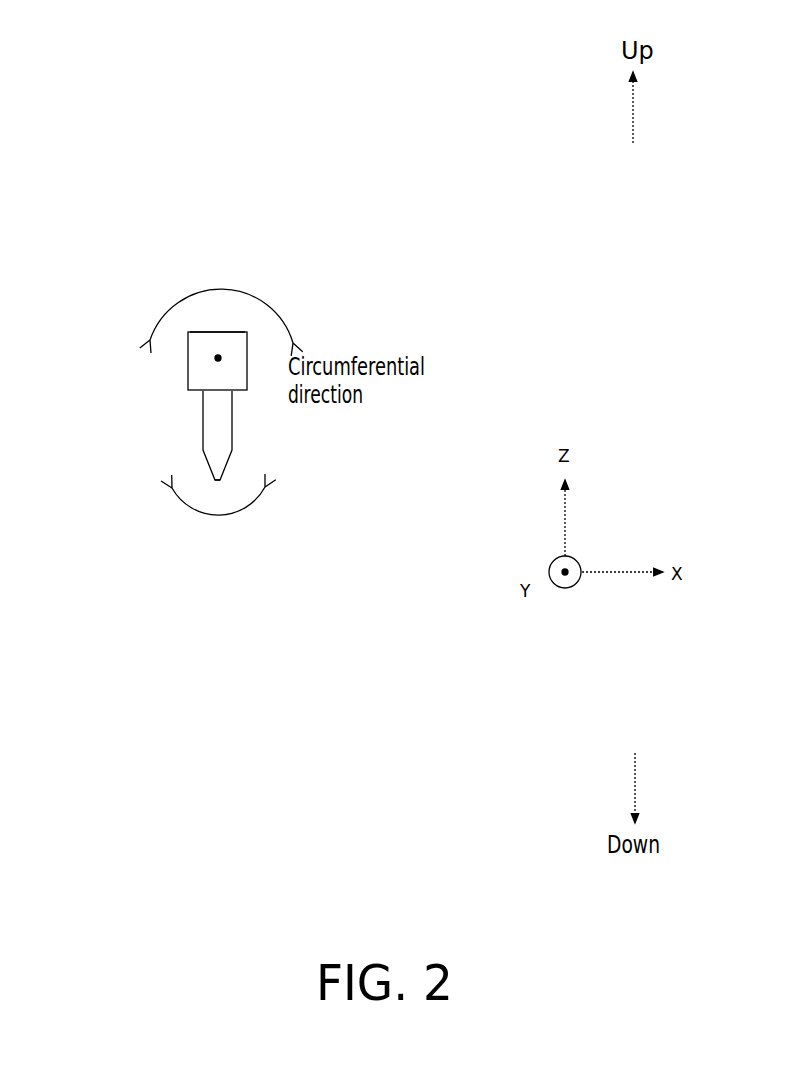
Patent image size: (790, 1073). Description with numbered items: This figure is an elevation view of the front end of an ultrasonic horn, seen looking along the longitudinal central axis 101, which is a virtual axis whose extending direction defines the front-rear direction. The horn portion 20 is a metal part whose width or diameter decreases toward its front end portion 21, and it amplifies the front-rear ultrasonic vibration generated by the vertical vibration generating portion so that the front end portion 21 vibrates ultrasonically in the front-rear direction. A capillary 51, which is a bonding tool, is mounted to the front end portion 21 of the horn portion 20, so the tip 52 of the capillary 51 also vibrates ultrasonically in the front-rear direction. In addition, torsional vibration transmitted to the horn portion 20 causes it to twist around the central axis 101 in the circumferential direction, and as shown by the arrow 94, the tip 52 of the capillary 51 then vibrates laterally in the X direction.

The longitudinal central axis 101 is at (217, 356).
The horn portion 20 is at (210, 329).
The front end portion 21 is at (233, 328).
The capillary 51 is at (232, 408).
The tip 52 is at (219, 483).
The arrow 94 is at (202, 515).